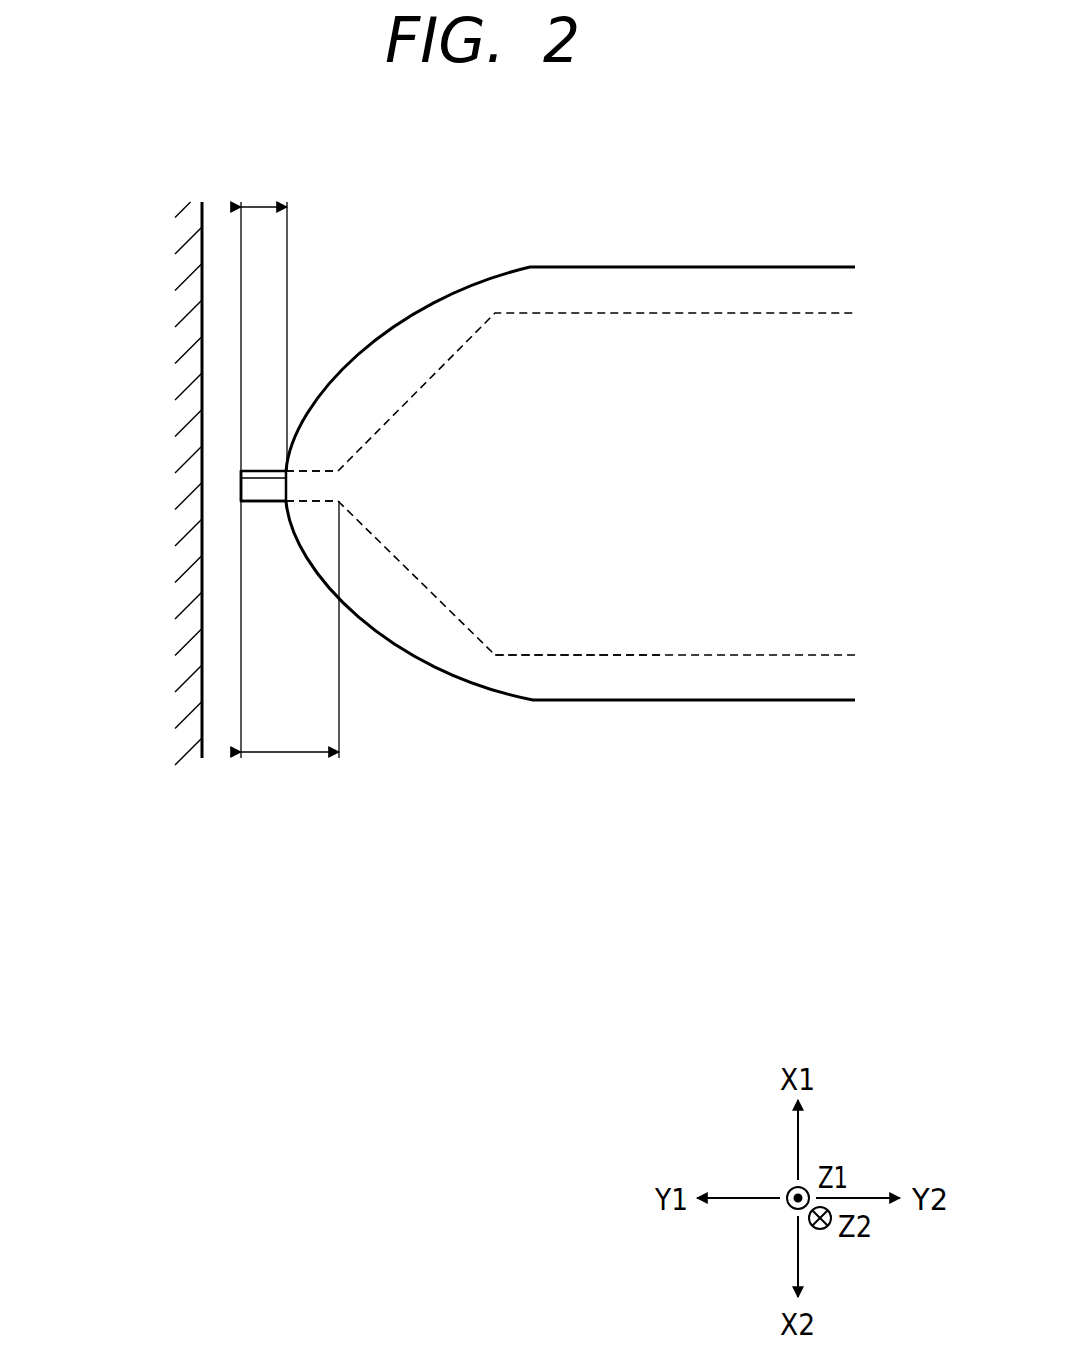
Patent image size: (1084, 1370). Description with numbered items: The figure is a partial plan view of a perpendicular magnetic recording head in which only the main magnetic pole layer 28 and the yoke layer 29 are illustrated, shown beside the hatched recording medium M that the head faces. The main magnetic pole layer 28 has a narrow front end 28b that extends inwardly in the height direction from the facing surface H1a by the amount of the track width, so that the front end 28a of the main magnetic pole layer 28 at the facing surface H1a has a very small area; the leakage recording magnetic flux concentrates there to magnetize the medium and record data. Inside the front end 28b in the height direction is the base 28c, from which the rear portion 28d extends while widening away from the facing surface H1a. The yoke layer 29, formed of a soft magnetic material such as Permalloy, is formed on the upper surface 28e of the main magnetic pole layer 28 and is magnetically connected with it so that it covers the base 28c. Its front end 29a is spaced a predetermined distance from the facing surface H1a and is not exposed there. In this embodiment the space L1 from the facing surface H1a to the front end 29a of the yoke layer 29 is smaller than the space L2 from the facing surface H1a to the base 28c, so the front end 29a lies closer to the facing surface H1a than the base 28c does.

The main magnetic pole layer 28 is at (695, 653).
The front end of the main magnetic pole layer 28a is at (240, 497).
The front end 28b is at (270, 488).
The base 28c is at (352, 470).
The rear portion 28d is at (627, 640).
The upper surface 28e is at (567, 640).
The yoke layer 29 is at (810, 702).
The front end of the yoke layer 29a is at (240, 473).
The facing surface H1a is at (240, 487).
The space from the facing surface to the front end of the yoke layer L1 is at (264, 458).
The space from the facing surface to the base L2 is at (290, 629).
The medium (recording medium) M is at (202, 740).